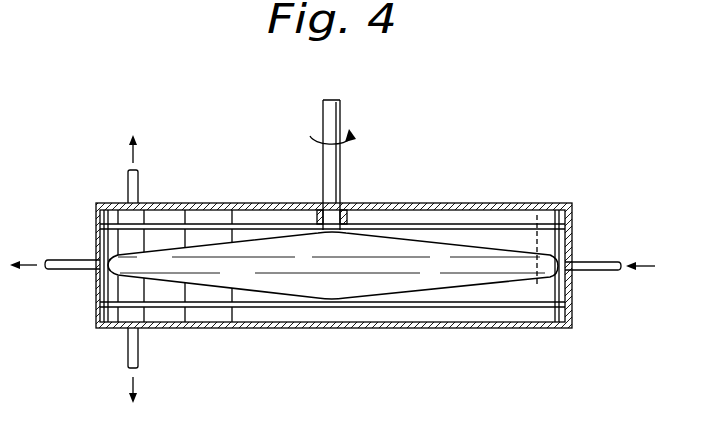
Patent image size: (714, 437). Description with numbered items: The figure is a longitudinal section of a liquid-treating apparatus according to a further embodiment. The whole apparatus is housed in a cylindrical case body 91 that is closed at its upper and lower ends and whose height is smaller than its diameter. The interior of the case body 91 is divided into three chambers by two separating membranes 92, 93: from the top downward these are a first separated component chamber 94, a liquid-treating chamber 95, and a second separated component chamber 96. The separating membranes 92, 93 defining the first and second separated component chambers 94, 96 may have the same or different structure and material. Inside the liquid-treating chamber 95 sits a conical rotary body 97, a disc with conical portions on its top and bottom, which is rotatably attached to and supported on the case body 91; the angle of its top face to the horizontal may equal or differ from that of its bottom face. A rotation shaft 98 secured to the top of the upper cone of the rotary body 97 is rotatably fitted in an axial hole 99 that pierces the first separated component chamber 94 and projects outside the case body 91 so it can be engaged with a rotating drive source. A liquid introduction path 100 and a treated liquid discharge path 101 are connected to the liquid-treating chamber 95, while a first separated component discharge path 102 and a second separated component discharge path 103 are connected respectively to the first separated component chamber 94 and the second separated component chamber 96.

The cylindrical case body 91 is at (468, 203).
The separating membrane 92 is at (525, 224).
The separating membrane 93 is at (541, 308).
The first separated component chamber 94 is at (203, 220).
The liquid-treating chamber 95 is at (115, 292).
The second separated component chamber 96 is at (258, 312).
The conical rotary body 97 is at (430, 277).
The rotation shaft 98 is at (342, 170).
The axial hole 99 is at (355, 203).
The liquid introduction path 100 is at (594, 262).
The treated liquid discharge path 101 is at (60, 259).
The first separated component discharge path 102 is at (140, 180).
The second separated component discharge path 103 is at (138, 352).